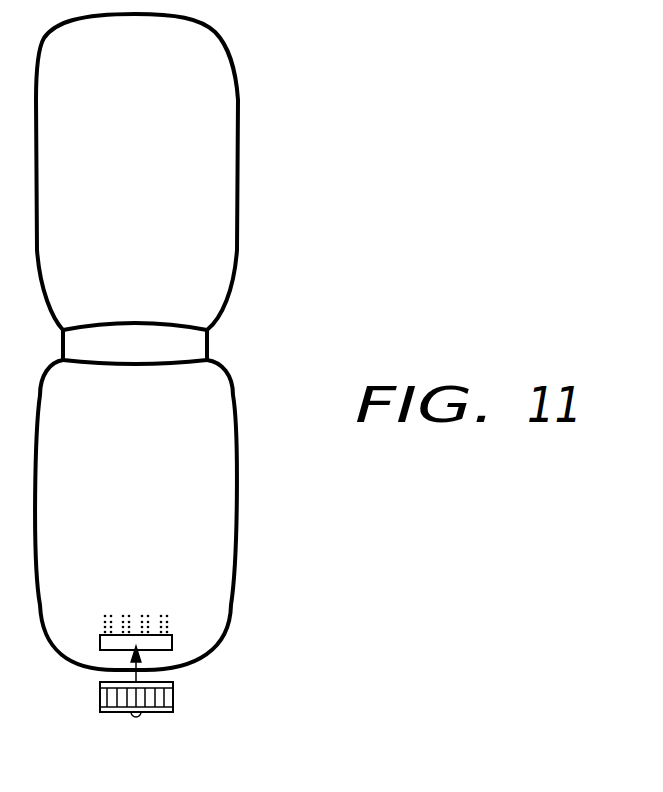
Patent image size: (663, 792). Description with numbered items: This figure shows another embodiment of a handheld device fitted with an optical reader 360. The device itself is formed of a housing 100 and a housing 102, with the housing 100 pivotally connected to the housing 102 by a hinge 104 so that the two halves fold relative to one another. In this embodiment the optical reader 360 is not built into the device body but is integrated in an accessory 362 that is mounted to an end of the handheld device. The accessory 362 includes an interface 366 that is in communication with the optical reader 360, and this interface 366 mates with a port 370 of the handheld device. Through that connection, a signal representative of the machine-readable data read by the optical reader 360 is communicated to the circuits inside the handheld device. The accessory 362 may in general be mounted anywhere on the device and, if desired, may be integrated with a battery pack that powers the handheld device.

The housing 100 is at (237, 110).
The housing 102 is at (237, 452).
The hinge 104 is at (207, 344).
The optical reader 360 is at (136, 717).
The accessory 362 is at (173, 707).
The interface 366 is at (173, 682).
The port 370 is at (172, 622).